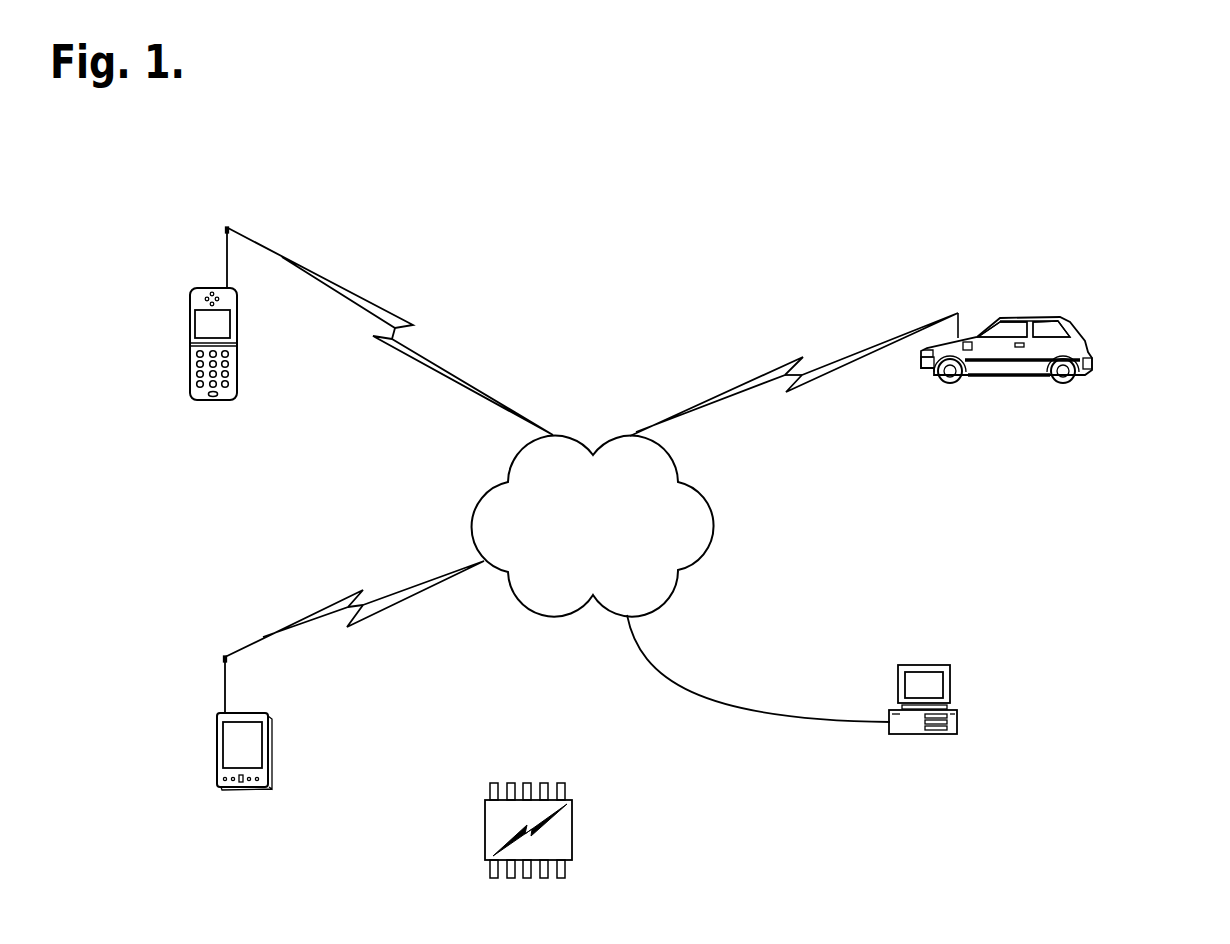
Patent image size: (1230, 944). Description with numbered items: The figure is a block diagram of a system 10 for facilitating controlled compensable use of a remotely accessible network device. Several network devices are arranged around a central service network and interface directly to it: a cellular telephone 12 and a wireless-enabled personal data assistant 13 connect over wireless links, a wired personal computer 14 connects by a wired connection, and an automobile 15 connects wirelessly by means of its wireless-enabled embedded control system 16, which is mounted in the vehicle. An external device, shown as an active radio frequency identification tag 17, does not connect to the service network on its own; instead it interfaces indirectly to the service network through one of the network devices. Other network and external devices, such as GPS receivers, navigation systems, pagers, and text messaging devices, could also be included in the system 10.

The system 10 is at (180, 130).
The cellular telephone 12 is at (166, 357).
The wireless-enabled personal data assistant 13 is at (185, 747).
The wired personal computer 14 is at (991, 700).
The automobile 15 is at (971, 350).
The wireless-enabled embedded control system 16 is at (1140, 341).
The active radio frequency identification tag 17 is at (600, 835).